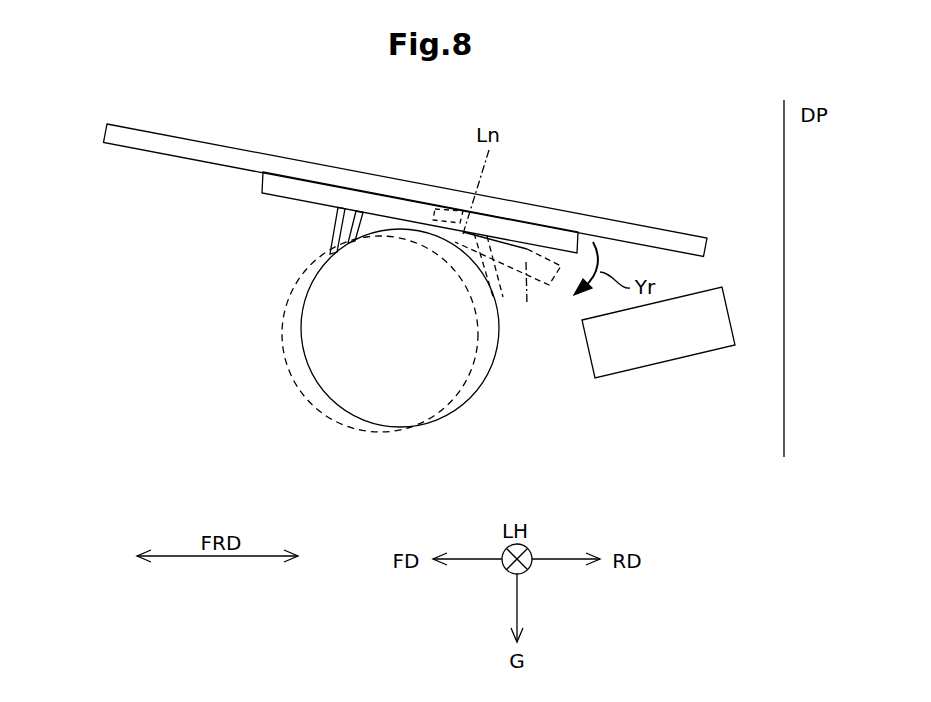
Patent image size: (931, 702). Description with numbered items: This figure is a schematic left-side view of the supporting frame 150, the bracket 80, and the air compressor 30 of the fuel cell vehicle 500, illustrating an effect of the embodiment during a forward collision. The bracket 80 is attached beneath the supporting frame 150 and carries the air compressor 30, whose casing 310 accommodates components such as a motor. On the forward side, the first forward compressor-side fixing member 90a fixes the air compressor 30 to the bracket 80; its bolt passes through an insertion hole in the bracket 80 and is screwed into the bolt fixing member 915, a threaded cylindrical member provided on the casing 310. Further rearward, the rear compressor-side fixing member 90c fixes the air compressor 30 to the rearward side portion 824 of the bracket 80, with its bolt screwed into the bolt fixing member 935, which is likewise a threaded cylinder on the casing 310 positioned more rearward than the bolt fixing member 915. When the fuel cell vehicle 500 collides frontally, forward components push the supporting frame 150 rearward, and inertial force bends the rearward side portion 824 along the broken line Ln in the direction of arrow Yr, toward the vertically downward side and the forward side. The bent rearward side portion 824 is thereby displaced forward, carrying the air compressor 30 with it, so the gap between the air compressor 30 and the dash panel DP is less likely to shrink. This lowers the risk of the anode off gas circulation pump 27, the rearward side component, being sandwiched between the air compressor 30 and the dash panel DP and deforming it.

The fuel cell vehicle 500 is at (82, 109).
The bracket 80 is at (399, 180).
The supporting frame 150 is at (663, 228).
The bolt fixing member 915 is at (261, 239).
The first forward compressor-side fixing member 90a is at (340, 228).
The bolt fixing member 935 is at (532, 225).
The rear compressor-side fixing member 90c is at (522, 247).
The rearward side portion 824 is at (550, 240).
The air compressor 30 is at (471, 406).
The casing 310 is at (310, 372).
The anode off gas circulation pump 27 is at (717, 350).